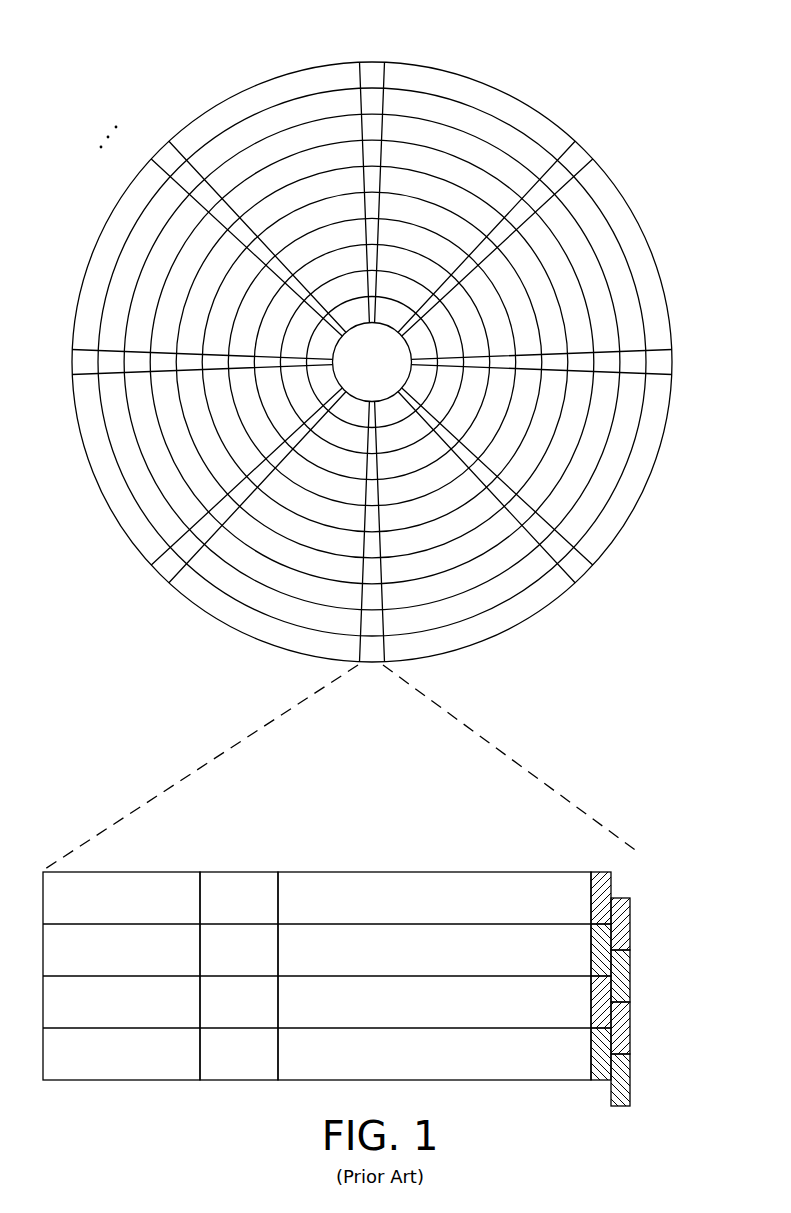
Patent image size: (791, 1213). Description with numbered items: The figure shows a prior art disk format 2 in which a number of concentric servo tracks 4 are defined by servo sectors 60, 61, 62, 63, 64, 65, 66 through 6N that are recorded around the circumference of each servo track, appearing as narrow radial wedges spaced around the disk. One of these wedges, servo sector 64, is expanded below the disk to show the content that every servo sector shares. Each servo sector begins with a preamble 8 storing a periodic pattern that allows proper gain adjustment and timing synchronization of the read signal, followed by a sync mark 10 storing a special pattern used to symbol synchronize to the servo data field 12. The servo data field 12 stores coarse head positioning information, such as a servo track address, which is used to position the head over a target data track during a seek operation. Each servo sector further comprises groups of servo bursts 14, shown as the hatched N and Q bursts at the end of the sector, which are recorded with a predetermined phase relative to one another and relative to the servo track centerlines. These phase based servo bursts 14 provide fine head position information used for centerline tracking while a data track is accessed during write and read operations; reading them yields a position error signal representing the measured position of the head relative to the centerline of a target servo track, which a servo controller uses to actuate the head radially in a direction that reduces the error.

The disk format 2 is at (372, 338).
The servo tracks 4 is at (473, 123).
The servo sector 60 is at (374, 72).
The servo sector 61 is at (577, 159).
The servo sector 62 is at (663, 365).
The servo sector 63 is at (581, 573).
The servo sector 64 is at (238, 732).
The servo sector 65 is at (163, 568).
The servo sector 66 is at (77, 362).
The servo sector 6N is at (168, 157).
The preamble 8 is at (129, 871).
The sync mark 10 is at (243, 871).
The servo data field 12 is at (426, 871).
The servo bursts 14 is at (627, 869).